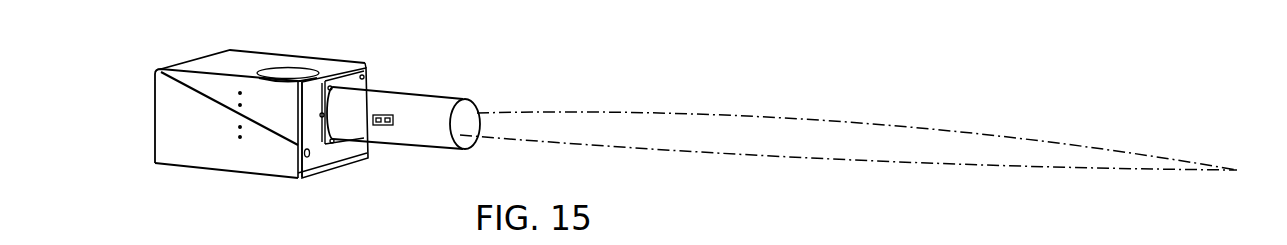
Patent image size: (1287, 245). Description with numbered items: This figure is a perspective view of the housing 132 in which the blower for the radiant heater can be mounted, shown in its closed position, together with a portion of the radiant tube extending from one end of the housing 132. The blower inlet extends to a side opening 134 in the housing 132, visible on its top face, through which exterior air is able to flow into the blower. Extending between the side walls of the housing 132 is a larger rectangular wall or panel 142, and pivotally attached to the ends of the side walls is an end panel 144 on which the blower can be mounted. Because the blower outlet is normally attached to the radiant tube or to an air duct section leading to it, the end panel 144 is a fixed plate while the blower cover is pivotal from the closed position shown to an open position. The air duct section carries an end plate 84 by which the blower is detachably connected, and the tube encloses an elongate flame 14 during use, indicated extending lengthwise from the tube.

The elongate flame 14 is at (853, 148).
The end plate 84 is at (372, 69).
The housing 132 is at (173, 115).
The side opening 134 is at (298, 72).
The rectangular wall or panel 142 is at (331, 163).
The end panel 144 is at (323, 158).